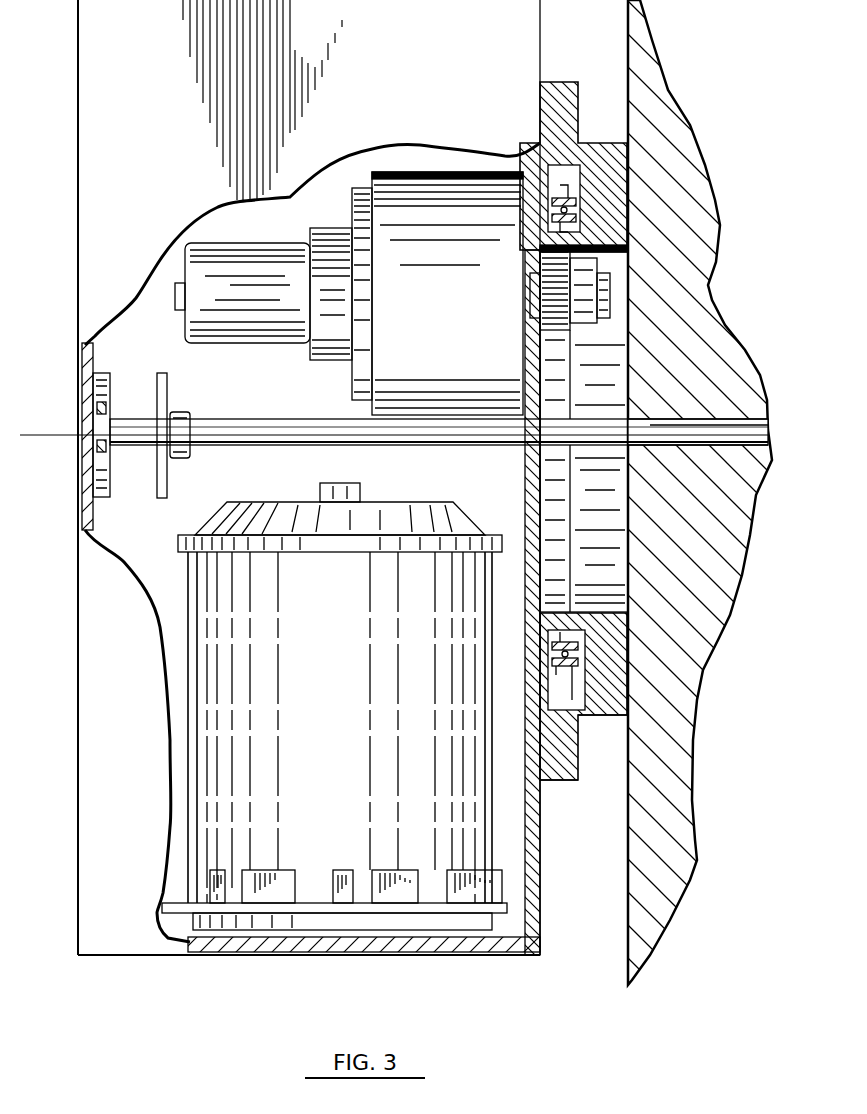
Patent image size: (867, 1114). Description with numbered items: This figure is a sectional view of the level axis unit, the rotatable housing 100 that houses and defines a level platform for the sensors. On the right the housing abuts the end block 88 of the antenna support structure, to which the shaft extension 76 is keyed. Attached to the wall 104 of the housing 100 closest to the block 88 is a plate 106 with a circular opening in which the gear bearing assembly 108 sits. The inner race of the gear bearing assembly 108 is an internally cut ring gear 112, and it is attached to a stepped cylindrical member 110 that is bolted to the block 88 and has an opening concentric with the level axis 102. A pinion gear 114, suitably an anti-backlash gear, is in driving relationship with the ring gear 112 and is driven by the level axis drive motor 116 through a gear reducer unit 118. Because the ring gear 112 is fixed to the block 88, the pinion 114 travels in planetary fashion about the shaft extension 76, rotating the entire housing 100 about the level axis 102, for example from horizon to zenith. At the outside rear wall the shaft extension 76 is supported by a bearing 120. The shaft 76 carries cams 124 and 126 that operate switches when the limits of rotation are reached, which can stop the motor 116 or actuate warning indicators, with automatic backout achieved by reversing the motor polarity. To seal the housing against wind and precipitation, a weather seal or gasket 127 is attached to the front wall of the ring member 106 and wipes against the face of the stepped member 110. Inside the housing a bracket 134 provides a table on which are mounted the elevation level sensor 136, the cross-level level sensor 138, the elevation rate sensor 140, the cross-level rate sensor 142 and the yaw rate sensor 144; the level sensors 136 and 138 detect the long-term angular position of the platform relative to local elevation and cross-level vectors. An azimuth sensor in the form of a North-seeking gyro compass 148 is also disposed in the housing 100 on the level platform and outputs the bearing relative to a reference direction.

The shaft extension 76 is at (676, 448).
The end block 88 is at (710, 245).
The housing 100 is at (172, 108).
The level axis 102 is at (298, 432).
The wall of the housing 104 is at (540, 880).
The plate 106 is at (560, 780).
The gear bearing assembly 108 is at (565, 172).
The stepped cylindrical member 110 is at (628, 722).
The ring gear 112 is at (568, 605).
The pinion gear 114 is at (562, 340).
The level axis drive motor 116 is at (267, 270).
The gear reducer unit 118 is at (435, 188).
The bearing 120 is at (112, 486).
The cam 124 is at (168, 385).
The cam 126 is at (190, 418).
The weather seal or gasket 127 is at (580, 190).
The bracket 134 is at (300, 910).
The elevation level sensor 136 is at (217, 870).
The cross-level level sensor 138 is at (276, 870).
The elevation rate sensor 140 is at (340, 870).
The cross-level rate sensor 142 is at (412, 870).
The yaw rate sensor 144 is at (470, 870).
The gyro compass 148 is at (283, 764).